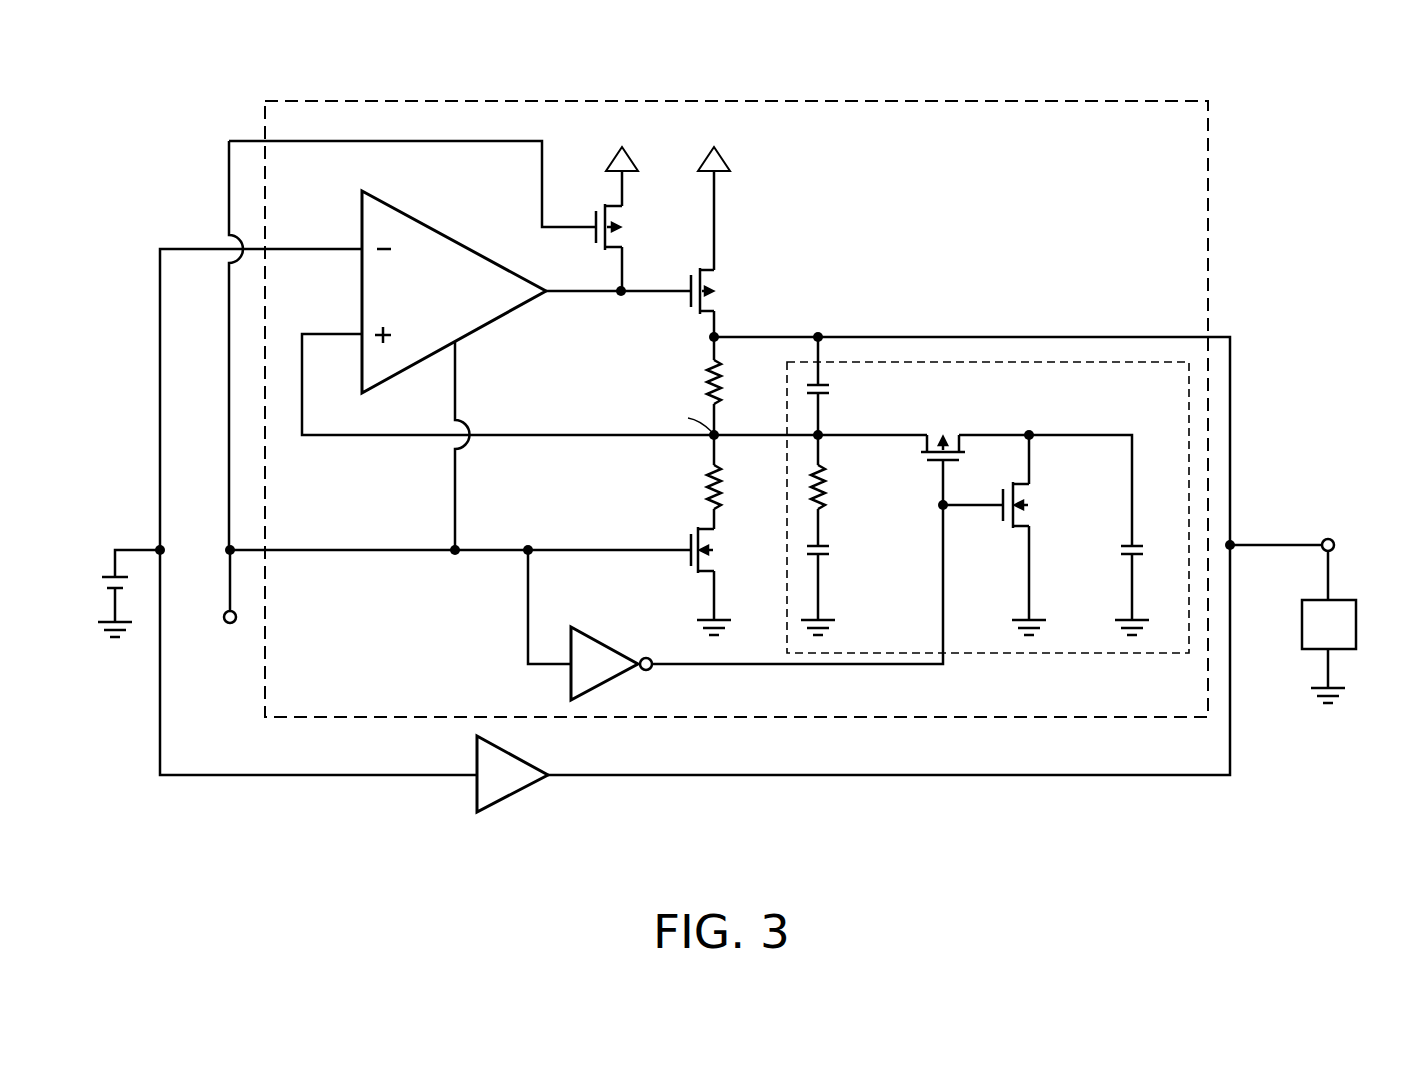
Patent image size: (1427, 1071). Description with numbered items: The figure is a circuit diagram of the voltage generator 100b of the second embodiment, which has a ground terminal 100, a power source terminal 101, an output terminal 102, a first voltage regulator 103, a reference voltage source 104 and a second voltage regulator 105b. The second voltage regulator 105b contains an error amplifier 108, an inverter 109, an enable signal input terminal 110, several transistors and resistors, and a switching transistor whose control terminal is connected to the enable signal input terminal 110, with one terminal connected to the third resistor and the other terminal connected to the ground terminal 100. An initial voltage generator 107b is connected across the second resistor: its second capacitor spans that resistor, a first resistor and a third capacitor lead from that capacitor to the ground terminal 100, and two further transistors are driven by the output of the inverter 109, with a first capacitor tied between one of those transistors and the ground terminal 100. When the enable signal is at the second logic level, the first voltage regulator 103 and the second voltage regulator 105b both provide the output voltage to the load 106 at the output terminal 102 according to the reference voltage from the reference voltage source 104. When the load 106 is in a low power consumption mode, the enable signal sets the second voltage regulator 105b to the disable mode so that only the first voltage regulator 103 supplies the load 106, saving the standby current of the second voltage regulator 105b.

The ground terminal 100 is at (703, 622).
The voltage generator 100b is at (1372, 858).
The power source terminal 101 is at (728, 163).
The output terminal 102 is at (1335, 545).
The first voltage regulator 103 is at (522, 790).
The reference voltage source 104 is at (100, 584).
The second voltage regulator 105b is at (1075, 717).
The load 106 is at (1357, 625).
The initial voltage generator 107b is at (1073, 653).
The error amplifier 108 is at (473, 250).
The inverter 109 is at (607, 640).
The enable signal input terminal 110 is at (222, 617).